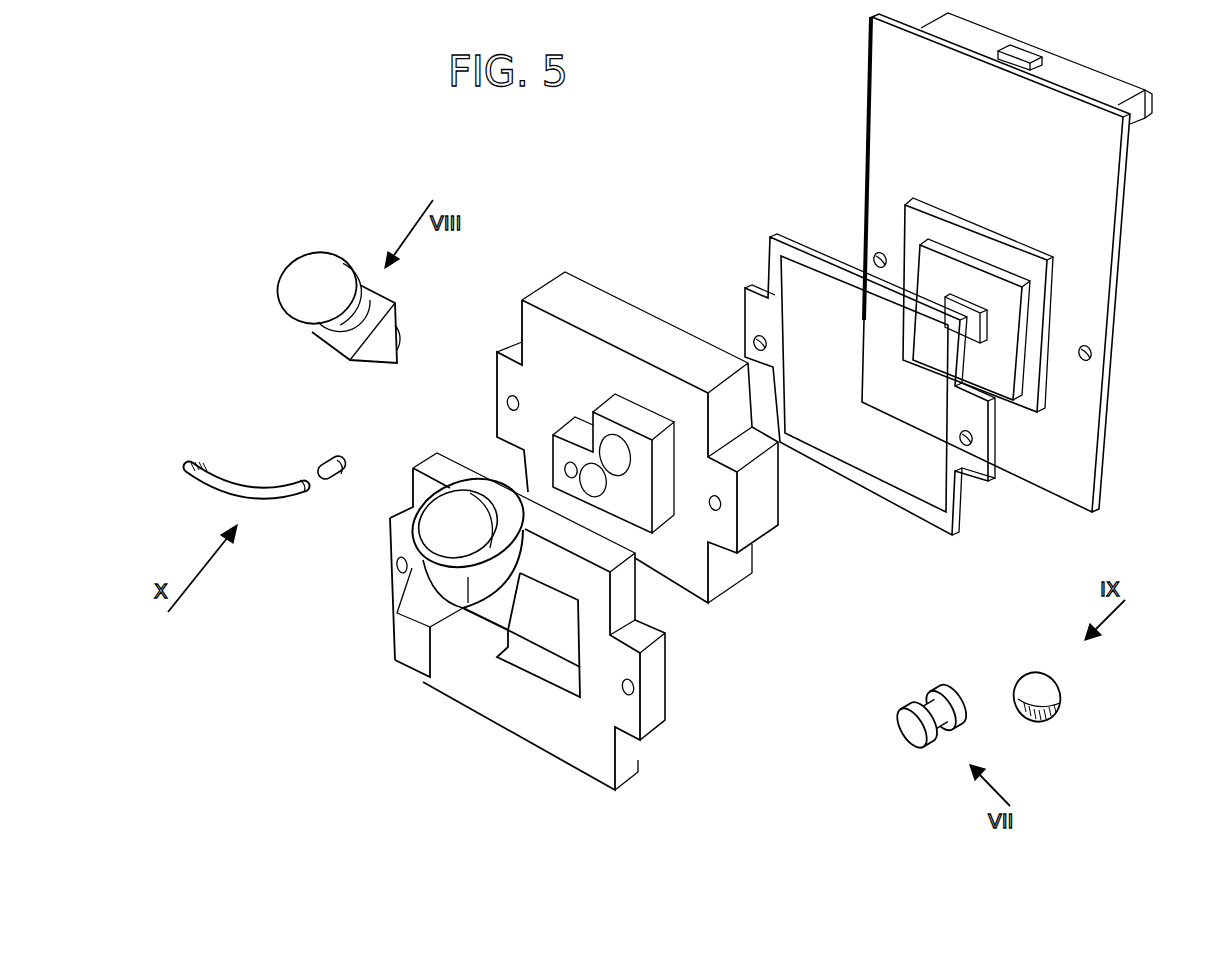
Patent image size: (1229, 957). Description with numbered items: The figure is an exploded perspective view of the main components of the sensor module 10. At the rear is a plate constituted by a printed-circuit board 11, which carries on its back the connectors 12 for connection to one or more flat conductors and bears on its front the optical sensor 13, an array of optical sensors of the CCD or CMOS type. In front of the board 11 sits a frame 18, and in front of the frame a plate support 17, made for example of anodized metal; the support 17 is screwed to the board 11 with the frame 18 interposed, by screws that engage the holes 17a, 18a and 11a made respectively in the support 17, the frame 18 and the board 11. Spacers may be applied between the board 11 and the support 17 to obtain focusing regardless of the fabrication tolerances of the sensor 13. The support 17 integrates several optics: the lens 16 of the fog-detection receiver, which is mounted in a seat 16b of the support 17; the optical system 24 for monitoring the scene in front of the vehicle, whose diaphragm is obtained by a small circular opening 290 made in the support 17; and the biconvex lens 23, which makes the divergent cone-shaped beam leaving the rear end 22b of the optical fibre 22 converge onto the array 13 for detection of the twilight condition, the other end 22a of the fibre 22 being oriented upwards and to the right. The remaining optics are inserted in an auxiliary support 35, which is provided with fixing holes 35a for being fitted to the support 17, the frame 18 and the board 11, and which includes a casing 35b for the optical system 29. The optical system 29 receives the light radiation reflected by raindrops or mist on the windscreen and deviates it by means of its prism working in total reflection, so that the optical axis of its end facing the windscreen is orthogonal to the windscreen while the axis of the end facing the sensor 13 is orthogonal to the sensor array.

The sensor module 10 is at (713, 146).
The printed-circuit board 11 is at (1143, 217).
The holes 11a is at (877, 255).
The connectors 12 is at (1077, 78).
The optical sensor 13 is at (977, 318).
The lens 16 is at (1048, 693).
The seat 16b is at (614, 448).
The plate support 17 is at (595, 272).
The holes 17a is at (511, 403).
The frame 18 is at (893, 500).
The holes 18a is at (757, 338).
The optical fibre 22 is at (262, 506).
The end of optical fibre 22a is at (187, 461).
The rear end of optical fibre 22b is at (303, 480).
The biconvex lens 23 is at (343, 479).
The optical system 24 is at (886, 733).
The optical system 29 is at (307, 247).
The small circular opening 290 is at (568, 476).
The auxiliary support 35 is at (523, 712).
The fixing holes 35a is at (400, 567).
The casing 35b is at (468, 578).